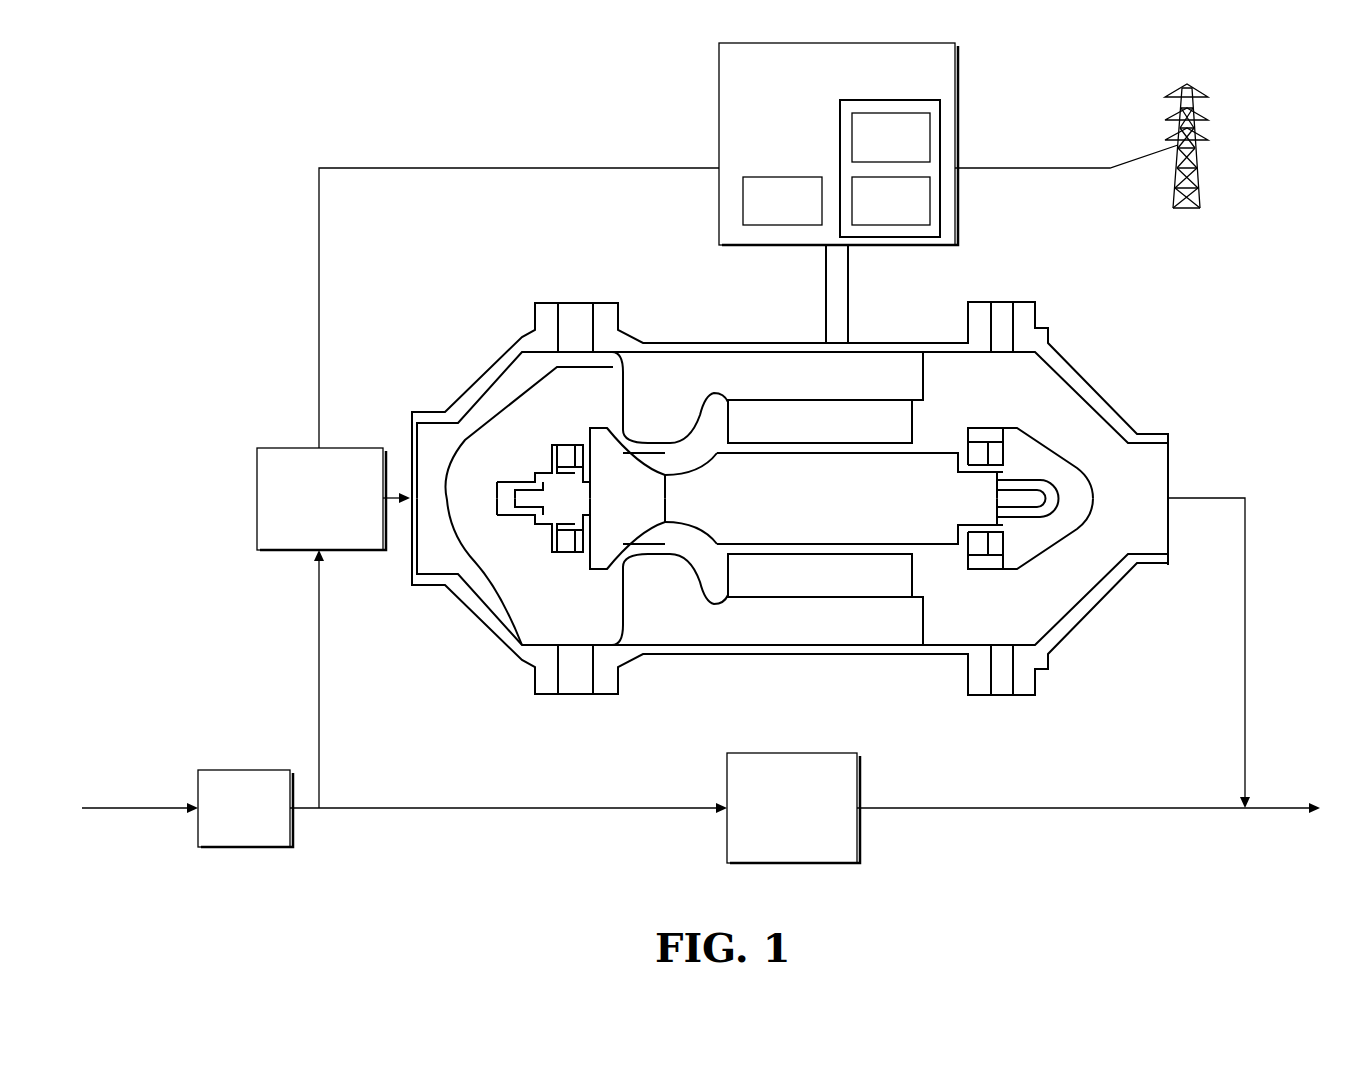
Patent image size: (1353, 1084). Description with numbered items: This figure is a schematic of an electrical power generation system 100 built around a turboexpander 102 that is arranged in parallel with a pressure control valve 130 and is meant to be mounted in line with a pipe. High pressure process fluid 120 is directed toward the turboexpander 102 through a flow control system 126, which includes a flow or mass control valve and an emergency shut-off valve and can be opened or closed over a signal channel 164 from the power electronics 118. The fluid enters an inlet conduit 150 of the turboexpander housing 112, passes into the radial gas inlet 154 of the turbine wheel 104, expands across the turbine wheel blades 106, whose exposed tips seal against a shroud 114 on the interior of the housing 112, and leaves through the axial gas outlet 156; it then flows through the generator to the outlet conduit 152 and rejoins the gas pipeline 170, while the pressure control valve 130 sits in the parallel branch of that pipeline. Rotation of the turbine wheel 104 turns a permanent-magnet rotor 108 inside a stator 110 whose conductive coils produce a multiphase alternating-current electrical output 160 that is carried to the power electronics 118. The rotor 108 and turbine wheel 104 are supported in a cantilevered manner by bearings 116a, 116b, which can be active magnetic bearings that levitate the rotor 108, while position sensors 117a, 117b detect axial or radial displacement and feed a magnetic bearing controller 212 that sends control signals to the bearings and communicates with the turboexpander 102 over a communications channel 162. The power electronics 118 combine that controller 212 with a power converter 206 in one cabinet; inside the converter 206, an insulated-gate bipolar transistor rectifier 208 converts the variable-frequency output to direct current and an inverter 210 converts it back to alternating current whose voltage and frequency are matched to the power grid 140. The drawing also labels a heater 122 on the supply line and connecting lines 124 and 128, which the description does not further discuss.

The electrical power generation system 100 is at (206, 147).
The turboexpander 102 is at (455, 345).
The turbine wheel 104 is at (650, 517).
The turbine wheel blades 106 is at (648, 547).
The rotor 108 is at (845, 517).
The stator 110 is at (845, 437).
The turboexpander housing 112 is at (880, 656).
The shroud 114 is at (637, 558).
The bearing 116a is at (567, 545).
The bearing 116b is at (978, 453).
The position sensor 117a is at (580, 552).
The position sensor 117b is at (998, 453).
The power electronics 118 is at (935, 88).
The process fluid 120 is at (150, 811).
The heater 122 is at (266, 836).
The inlet line 124 is at (319, 655).
The flow control system 126 is at (343, 542).
The outlet line 128 is at (1245, 655).
The pressure control valve 130 is at (812, 852).
The power grid 140 is at (1175, 192).
The inlet conduit 150 is at (410, 433).
The outlet conduit 152 is at (1170, 478).
The radial gas inlet 154 is at (620, 398).
The axial gas outlet 156 is at (680, 455).
The electrical output 160 is at (848, 292).
The communications channel 162 is at (826, 292).
The signal channel 164 is at (460, 168).
The gas pipeline 170 is at (1052, 811).
The power converter 206 is at (940, 113).
The rectifier 208 is at (912, 152).
The inverter 210 is at (912, 215).
The magnetic bearing controller 212 is at (803, 215).